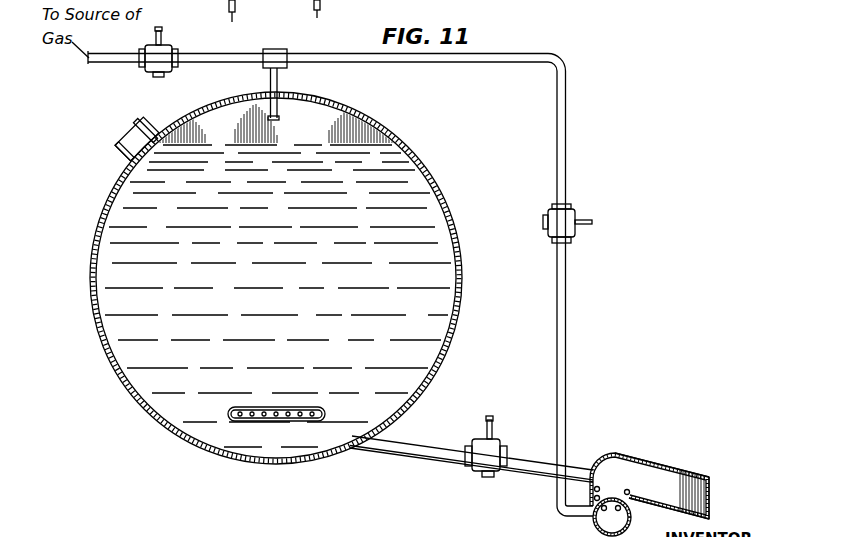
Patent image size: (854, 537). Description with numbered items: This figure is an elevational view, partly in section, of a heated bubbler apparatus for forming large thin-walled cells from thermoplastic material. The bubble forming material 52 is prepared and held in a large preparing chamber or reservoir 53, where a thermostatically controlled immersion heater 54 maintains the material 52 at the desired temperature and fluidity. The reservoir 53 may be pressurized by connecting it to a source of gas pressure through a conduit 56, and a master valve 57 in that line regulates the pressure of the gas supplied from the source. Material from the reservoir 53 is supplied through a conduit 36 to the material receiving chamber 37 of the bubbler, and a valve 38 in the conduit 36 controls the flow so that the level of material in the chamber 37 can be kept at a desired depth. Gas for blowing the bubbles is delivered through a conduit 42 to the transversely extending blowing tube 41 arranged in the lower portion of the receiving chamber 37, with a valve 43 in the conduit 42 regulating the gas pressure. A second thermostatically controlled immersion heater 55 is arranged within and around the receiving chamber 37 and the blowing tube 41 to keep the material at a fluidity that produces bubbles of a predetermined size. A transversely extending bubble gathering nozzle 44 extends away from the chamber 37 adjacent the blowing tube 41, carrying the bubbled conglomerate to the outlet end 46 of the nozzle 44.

The conduit 36 is at (528, 463).
The material receiving chamber 37 is at (610, 461).
The valve 38 is at (485, 455).
The blowing tube 41 is at (632, 522).
The conduit 42 is at (563, 287).
The valve 43 is at (560, 223).
The nozzle 44 is at (672, 463).
The outlet end 46 is at (712, 495).
The material 52 is at (413, 175).
The reservoir 53 is at (337, 100).
The immersion heater 54 is at (232, 415).
The immersion heater 55 is at (600, 491).
The conduit 56 is at (268, 79).
The master valve 57 is at (157, 63).